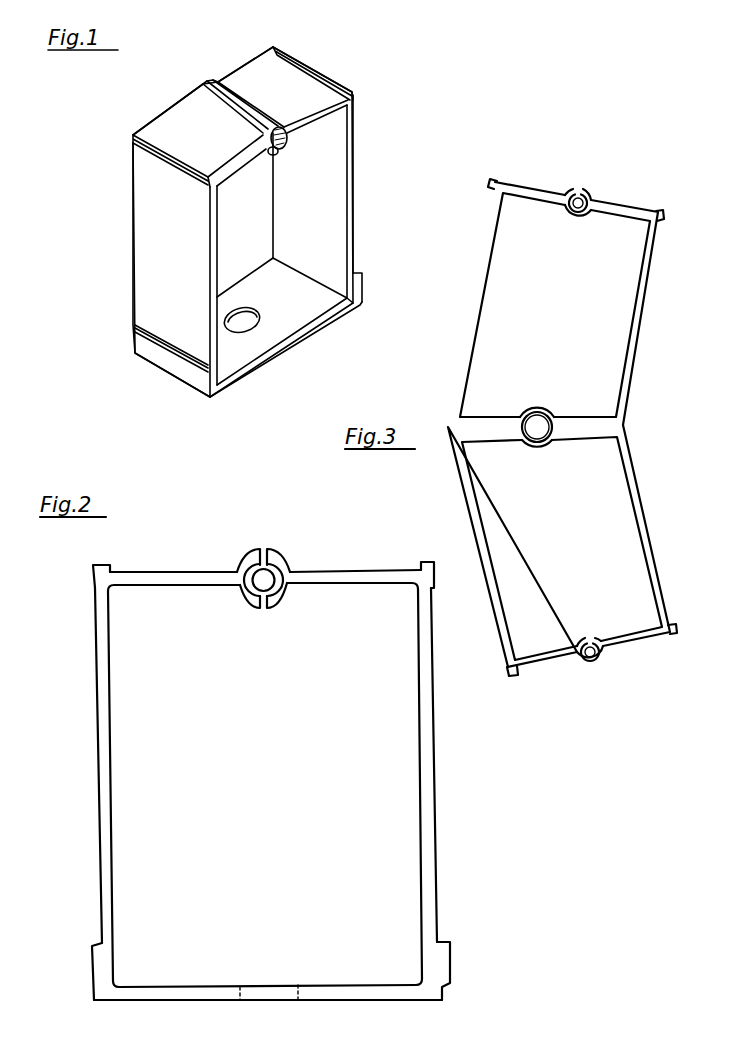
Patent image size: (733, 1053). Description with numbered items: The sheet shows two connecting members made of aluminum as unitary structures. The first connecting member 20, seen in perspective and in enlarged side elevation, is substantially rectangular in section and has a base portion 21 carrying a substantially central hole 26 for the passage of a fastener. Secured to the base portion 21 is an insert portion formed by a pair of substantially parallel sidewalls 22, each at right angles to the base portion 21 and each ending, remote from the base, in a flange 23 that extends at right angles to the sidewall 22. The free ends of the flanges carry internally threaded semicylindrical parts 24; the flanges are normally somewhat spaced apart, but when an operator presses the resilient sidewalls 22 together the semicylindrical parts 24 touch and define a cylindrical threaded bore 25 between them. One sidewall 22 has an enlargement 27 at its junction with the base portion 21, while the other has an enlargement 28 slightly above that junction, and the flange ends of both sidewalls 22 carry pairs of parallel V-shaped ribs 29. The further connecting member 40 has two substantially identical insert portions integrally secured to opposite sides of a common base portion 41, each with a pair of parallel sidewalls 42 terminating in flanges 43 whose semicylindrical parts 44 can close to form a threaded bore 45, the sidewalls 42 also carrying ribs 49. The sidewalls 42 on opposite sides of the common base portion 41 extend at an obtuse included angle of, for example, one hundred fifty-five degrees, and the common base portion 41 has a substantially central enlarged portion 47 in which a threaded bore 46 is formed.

In FIG. 1, the connecting member 20 is at (361, 175).
In FIG. 1, the base wall or portion 21 is at (255, 352).
In FIG. 2, the base wall or portion 21 is at (368, 992).
In FIG. 1, the sidewalls 22 is at (138, 257).
In FIG. 2, the sidewalls 22 is at (112, 788).
In FIG. 1, the flange 23 is at (267, 62).
In FIG. 2, the flange 23 is at (162, 584).
In FIG. 1, the semicylindrical parts 24 is at (291, 136).
In FIG. 2, the semicylindrical parts 24 is at (248, 597).
In FIG. 1, the cylindrical threaded bore 25 is at (278, 151).
In FIG. 2, the cylindrical threaded bore 25 is at (263, 572).
In FIG. 1, the hole 26 is at (248, 321).
In FIG. 2, the hole 26 is at (277, 995).
In FIG. 1, the enlargement 27 is at (164, 364).
In FIG. 2, the enlargement 27 is at (97, 975).
In FIG. 1, the enlargement 28 is at (361, 287).
In FIG. 2, the enlargement 28 is at (444, 960).
In FIG. 1, the ribs 29 is at (132, 136).
In FIG. 2, the ribs 29 is at (100, 578).
In FIG. 3, the connecting member 40 is at (643, 397).
In FIG. 3, the common base portion 41 is at (592, 430).
In FIG. 3, the sidewalls 42 is at (642, 283).
In FIG. 3, the flanges 43 is at (555, 193).
In FIG. 3, the semicylindrical parts 44 is at (580, 215).
In FIG. 3, the cylindrical threaded bore 45 is at (588, 664).
In FIG. 3, the threaded bore 46 is at (538, 421).
In FIG. 3, the enlarged portion 47 is at (539, 444).
In FIG. 3, the ribs 49 is at (662, 223).